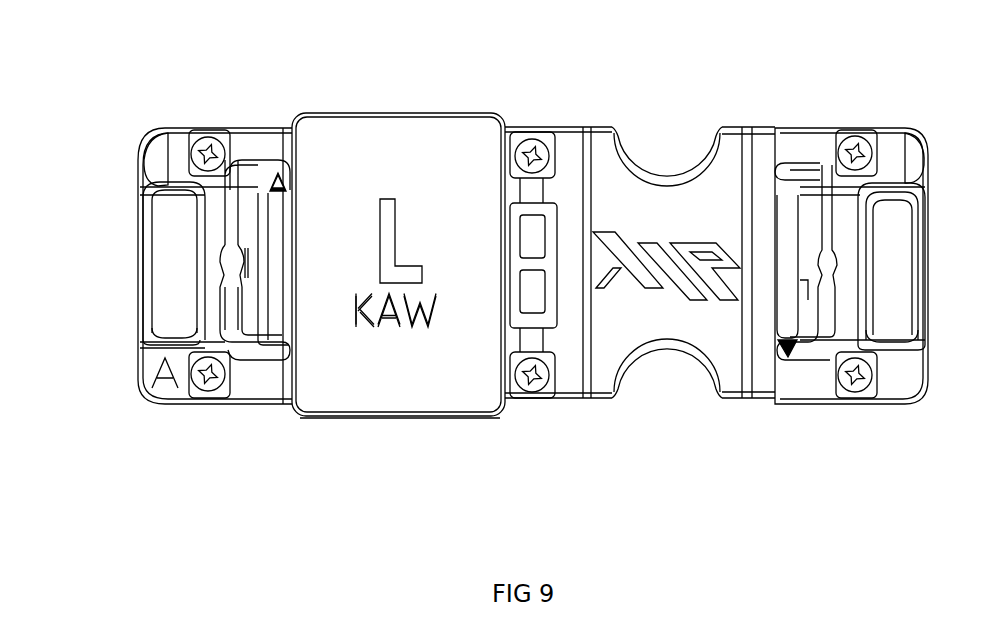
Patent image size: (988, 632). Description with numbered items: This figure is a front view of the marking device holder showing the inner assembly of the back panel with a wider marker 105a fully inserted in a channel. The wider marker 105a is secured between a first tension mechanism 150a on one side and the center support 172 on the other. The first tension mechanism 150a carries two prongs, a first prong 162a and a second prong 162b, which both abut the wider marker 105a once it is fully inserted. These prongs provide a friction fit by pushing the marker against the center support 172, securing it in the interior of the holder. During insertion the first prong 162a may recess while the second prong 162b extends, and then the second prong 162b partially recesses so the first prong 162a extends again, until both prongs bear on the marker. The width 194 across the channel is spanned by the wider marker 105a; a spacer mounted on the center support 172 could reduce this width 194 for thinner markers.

The first tension mechanism 150a is at (268, 163).
The wider marker 105a is at (455, 166).
The center support 172 is at (557, 243).
The first prong 162a is at (264, 186).
The second prong 162b is at (268, 347).
The width 194 is at (318, 434).